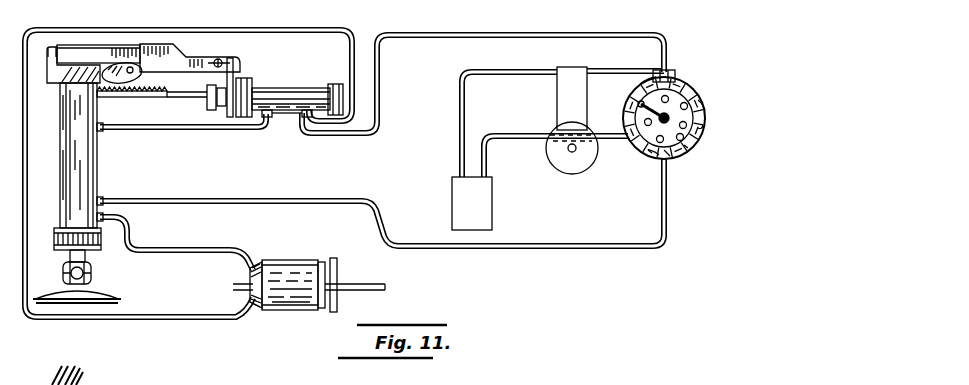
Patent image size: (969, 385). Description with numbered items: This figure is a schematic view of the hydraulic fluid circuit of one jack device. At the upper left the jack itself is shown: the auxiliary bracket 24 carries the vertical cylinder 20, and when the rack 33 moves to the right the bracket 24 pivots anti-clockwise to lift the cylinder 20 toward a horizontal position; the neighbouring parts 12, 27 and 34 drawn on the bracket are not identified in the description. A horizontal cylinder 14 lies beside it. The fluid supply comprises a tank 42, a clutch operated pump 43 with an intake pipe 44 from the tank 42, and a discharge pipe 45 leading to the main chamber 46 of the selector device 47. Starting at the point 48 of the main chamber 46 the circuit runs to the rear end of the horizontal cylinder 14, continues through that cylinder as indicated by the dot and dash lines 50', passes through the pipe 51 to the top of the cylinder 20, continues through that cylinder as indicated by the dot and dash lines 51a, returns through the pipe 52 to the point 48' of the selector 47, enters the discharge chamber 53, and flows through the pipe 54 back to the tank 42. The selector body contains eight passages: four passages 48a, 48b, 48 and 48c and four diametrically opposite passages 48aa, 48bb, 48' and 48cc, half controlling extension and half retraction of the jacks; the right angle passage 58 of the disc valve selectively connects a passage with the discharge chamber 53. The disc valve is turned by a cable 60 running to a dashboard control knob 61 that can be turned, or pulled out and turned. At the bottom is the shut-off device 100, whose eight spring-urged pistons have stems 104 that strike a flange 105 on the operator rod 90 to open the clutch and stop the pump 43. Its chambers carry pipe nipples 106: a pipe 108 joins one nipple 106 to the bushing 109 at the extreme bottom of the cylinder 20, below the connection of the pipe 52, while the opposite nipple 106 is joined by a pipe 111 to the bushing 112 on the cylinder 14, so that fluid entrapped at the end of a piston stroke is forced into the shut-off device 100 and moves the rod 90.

The arm 12 is at (80, 47).
The horizontal cylinder 14 is at (289, 89).
The vertical cylinder 20 is at (63, 147).
The auxiliary bracket 24 is at (52, 78).
The bracket corner 27 is at (50, 46).
The rack 33 is at (107, 93).
The pawl lever 34 is at (152, 80).
The tank 42 is at (455, 208).
The clutch operated pump 43 is at (553, 65).
The intake pipe 44 is at (496, 71).
The discharge pipe 45 is at (600, 70).
The main chamber 46 is at (690, 110).
The selector device 47 is at (675, 82).
The passage 48 is at (676, 106).
The passage 48' is at (686, 172).
The passage 48a is at (648, 152).
The passage 48b is at (663, 80).
The passage 48c is at (705, 97).
The passage 48aa is at (703, 125).
The passage 48bb is at (687, 147).
The passage 48cc is at (656, 155).
The dot and dash lines 50' is at (308, 136).
The pipe 51 is at (225, 131).
The dot and dash lines 51a is at (103, 150).
The pipe 52 is at (184, 200).
The discharge chamber 53 is at (640, 197).
The pipe 54 is at (515, 128).
The right angle passage 58 is at (437, 36).
The cable 60 is at (627, 103).
The control knob 61 is at (27, 384).
The operator rod 90 is at (235, 283).
The shut-off device 100 is at (282, 308).
The stem 104 is at (328, 263).
The flange 105 is at (338, 268).
The pipe nipple 106 is at (254, 262).
The pipe 108 is at (160, 247).
The pipe bushing 109 is at (89, 282).
The pipe 111 is at (153, 319).
The bushing 112 is at (320, 92).